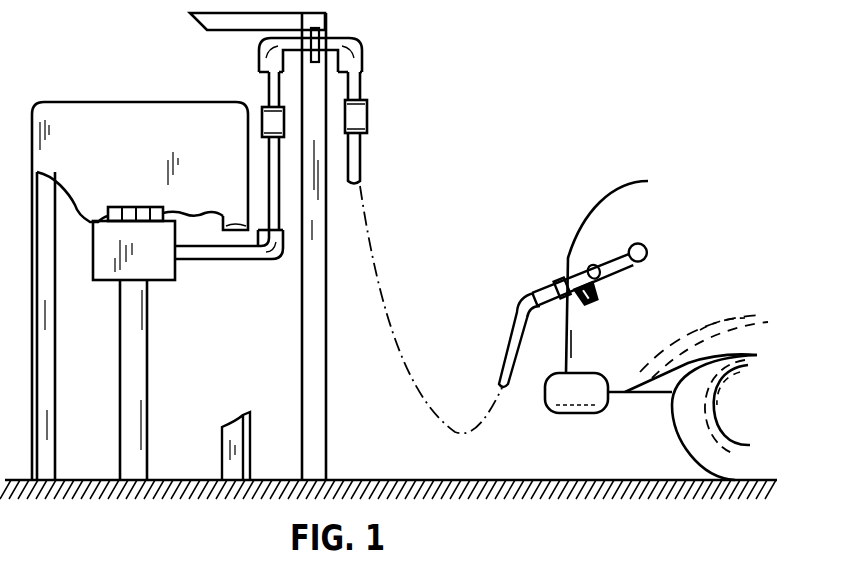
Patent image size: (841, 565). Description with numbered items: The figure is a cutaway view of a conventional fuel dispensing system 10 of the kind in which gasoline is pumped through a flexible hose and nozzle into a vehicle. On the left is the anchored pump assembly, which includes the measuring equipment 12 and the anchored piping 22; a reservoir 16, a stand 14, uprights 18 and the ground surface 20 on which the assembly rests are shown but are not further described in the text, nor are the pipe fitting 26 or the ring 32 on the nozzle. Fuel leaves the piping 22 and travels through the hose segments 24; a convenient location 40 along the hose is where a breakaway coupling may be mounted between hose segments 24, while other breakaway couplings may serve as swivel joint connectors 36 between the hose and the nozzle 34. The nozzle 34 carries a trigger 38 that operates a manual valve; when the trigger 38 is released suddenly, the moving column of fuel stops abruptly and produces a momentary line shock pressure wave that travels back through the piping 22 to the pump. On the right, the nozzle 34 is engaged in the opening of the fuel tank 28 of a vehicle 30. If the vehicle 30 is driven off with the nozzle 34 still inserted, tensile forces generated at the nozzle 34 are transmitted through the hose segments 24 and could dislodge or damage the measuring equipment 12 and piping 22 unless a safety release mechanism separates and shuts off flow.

The vehicle washing system 10 is at (567, 94).
The measuring equipment 12 is at (163, 278).
The pump stand 14 is at (136, 398).
The cleaning solution tank 16 is at (128, 112).
The support stand 18 is at (52, 340).
The ground 20 is at (394, 479).
The piping 22 is at (214, 259).
The hose segments 24 is at (364, 92).
The pipe fitting 26 is at (320, 33).
The fuel tank 28 is at (645, 240).
The vehicle 30 is at (601, 196).
The ring 32 is at (639, 266).
The nozzle 34 is at (563, 264).
The swivel joint connectors 36 is at (518, 312).
The trigger 38 is at (590, 302).
The convenient location 40 is at (367, 118).